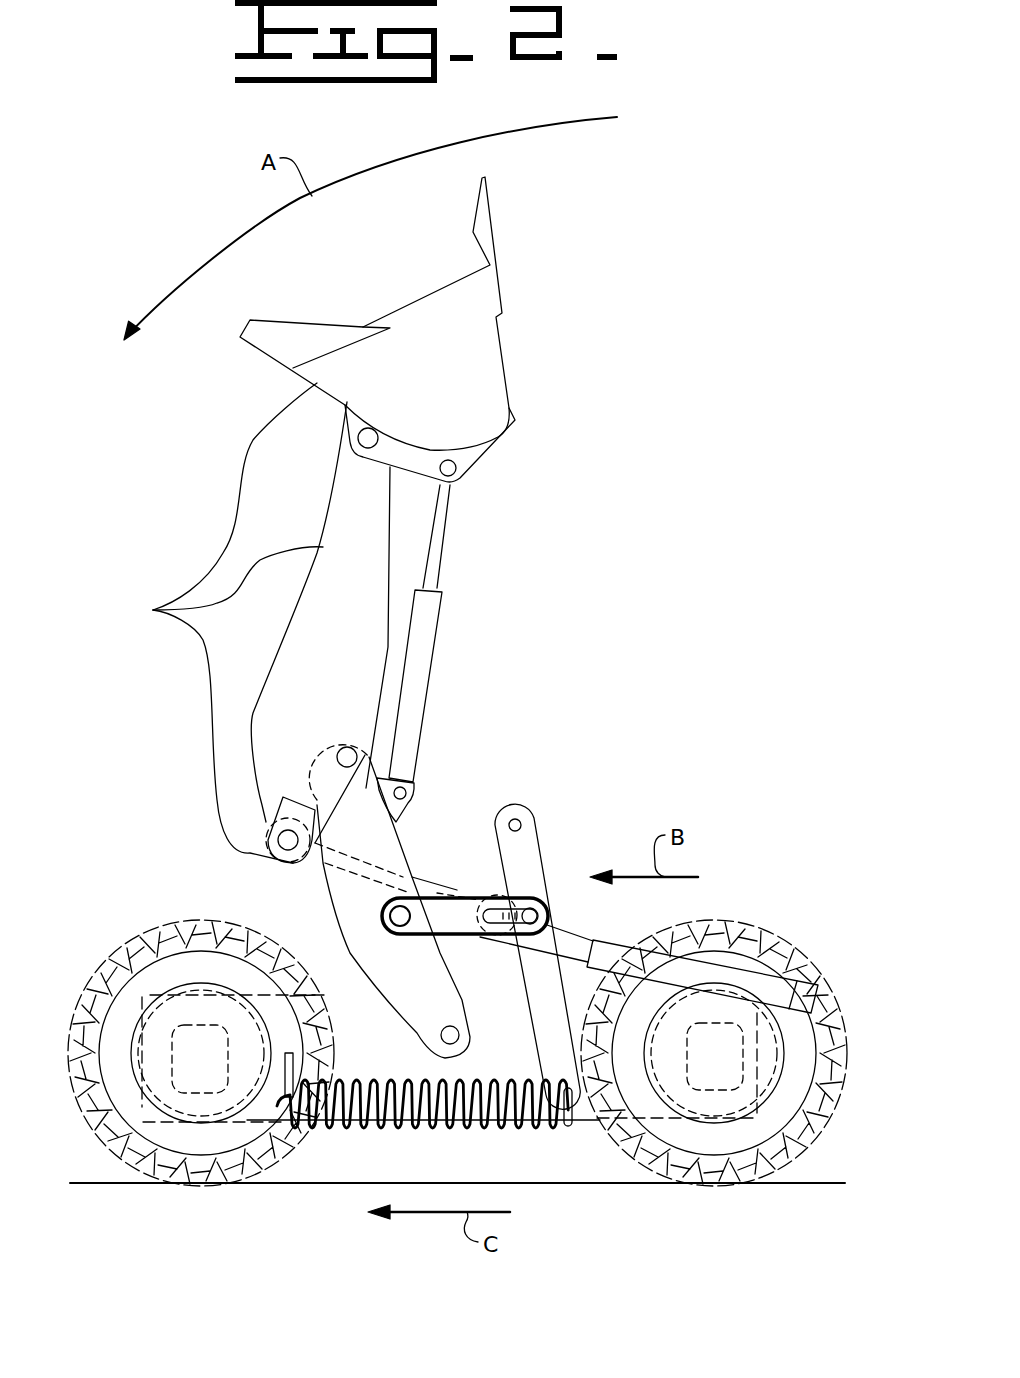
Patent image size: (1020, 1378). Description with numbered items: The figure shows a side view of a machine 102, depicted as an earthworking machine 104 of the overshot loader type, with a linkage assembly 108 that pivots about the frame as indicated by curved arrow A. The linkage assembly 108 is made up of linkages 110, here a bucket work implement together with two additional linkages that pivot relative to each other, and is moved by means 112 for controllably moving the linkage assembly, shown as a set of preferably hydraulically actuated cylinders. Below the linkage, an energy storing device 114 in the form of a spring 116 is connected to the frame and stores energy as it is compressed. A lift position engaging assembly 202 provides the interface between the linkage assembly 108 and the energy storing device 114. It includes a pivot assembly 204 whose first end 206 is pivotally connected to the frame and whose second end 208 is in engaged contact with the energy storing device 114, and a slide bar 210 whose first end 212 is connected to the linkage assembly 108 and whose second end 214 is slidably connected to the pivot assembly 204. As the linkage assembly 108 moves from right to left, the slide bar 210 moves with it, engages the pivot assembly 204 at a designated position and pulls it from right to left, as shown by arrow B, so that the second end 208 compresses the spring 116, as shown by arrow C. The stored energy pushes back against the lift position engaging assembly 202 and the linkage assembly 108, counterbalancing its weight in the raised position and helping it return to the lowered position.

The machine 102 is at (640, 451).
The earthworking machine 104 is at (652, 511).
The linkage assembly 108 is at (155, 468).
The linkage 110 is at (158, 610).
The means for controllably moving the linkage assembly 112 is at (420, 880).
The energy storing device 114 is at (262, 1200).
The spring 116 is at (362, 1127).
The lift position engaging assembly 202 is at (652, 788).
The pivot assembly 204 is at (517, 972).
The first end of the pivot assembly 206 is at (548, 812).
The second end of the pivot assembly 208 is at (571, 1122).
The slide bar 210 is at (437, 878).
The first end of the slide bar 212 is at (388, 912).
The second end of the slide bar 214 is at (563, 927).